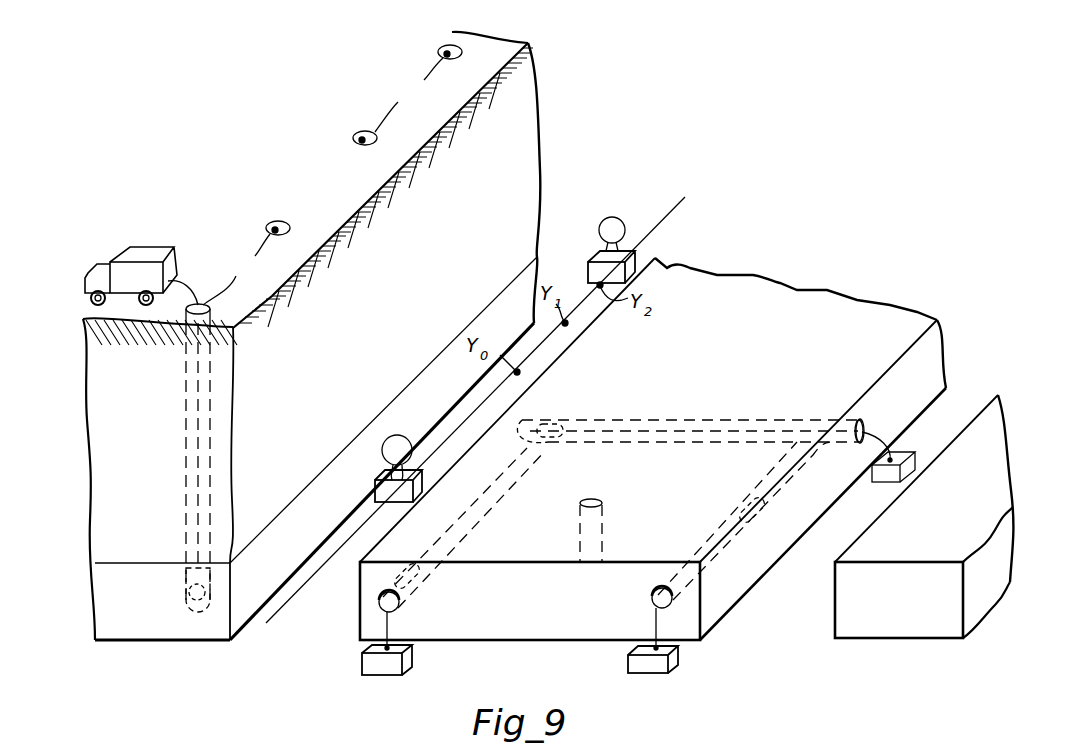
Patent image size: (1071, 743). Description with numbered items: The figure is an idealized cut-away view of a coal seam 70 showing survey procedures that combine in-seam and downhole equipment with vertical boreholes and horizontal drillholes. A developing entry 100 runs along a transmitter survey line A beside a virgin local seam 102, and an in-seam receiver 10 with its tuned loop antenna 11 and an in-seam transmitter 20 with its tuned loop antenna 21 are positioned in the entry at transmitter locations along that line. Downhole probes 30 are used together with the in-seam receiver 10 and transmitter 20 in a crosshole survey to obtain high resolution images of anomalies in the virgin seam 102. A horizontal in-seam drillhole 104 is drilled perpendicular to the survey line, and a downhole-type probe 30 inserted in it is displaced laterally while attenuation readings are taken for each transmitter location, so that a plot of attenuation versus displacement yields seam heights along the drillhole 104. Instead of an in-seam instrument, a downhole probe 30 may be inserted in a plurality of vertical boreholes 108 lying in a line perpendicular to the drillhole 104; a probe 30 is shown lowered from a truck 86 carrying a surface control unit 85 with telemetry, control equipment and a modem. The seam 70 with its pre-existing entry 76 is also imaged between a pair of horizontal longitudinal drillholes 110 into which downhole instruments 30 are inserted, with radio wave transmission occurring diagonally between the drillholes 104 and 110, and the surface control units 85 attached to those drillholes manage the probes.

The receiver 10 is at (376, 481).
The tuned loop antenna 11 is at (404, 440).
The transmitter 20 is at (590, 266).
The tuned loop antenna 21 is at (622, 222).
The downhole probe 30 is at (186, 597).
The coal seam 70 is at (718, 354).
The pre-existing entry 76 is at (790, 615).
The surface control unit 85 is at (412, 662).
The truck 86 is at (153, 257).
The developing entry 100 is at (320, 613).
The virgin local seam 102 is at (310, 541).
The horizontal in-seam drillhole 104 is at (861, 424).
The borehole 108 is at (597, 500).
The horizontal longitudinal drillhole 110 is at (397, 608).